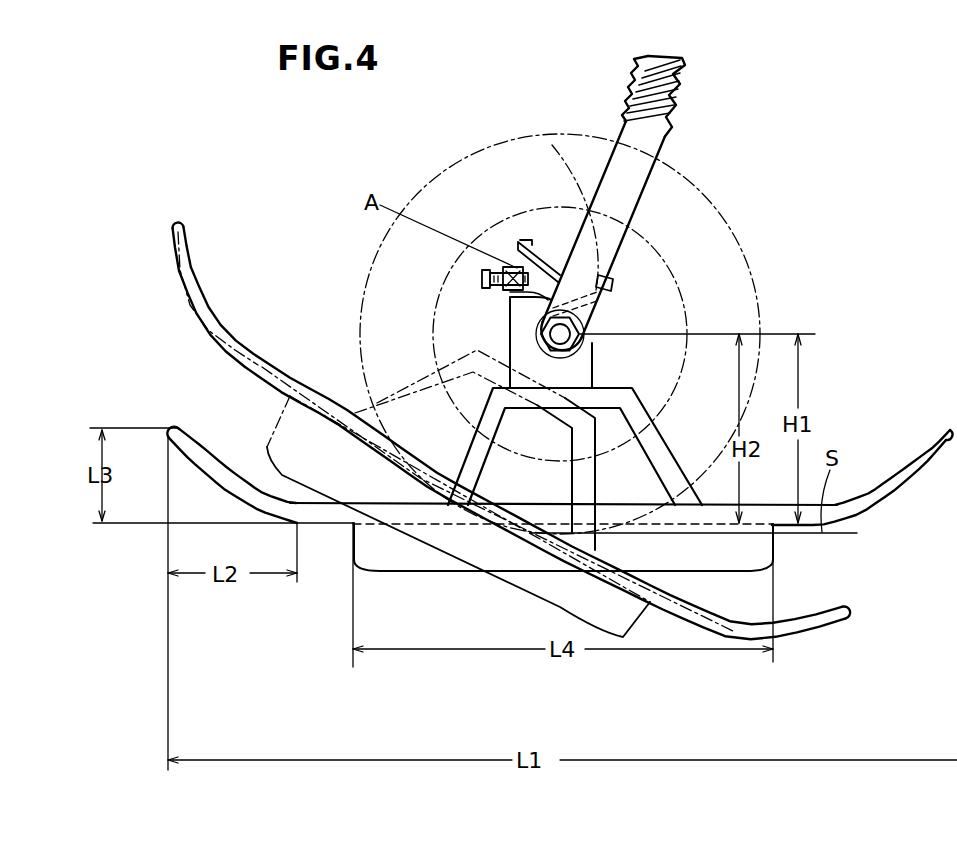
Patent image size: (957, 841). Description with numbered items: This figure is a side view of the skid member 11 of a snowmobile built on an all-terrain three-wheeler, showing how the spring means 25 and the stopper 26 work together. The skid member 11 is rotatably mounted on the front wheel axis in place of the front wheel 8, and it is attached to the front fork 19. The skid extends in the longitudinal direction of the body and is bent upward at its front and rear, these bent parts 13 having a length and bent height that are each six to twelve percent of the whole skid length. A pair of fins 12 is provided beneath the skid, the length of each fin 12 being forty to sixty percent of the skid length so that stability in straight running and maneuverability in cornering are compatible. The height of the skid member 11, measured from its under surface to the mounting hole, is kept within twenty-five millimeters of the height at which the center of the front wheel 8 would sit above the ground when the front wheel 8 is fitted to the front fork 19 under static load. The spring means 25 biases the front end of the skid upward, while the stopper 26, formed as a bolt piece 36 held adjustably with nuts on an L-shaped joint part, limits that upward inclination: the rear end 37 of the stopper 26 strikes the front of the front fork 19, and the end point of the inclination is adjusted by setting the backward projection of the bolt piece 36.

The front wheel 8 is at (783, 262).
The skid member 11 is at (293, 378).
The fins 12 is at (360, 468).
The bent parts 13 is at (213, 470).
The front fork 19 is at (645, 188).
The spring means 25 is at (582, 357).
The stopper 26 is at (457, 275).
The bolt piece 36 is at (480, 270).
The rear end 37 is at (552, 145).